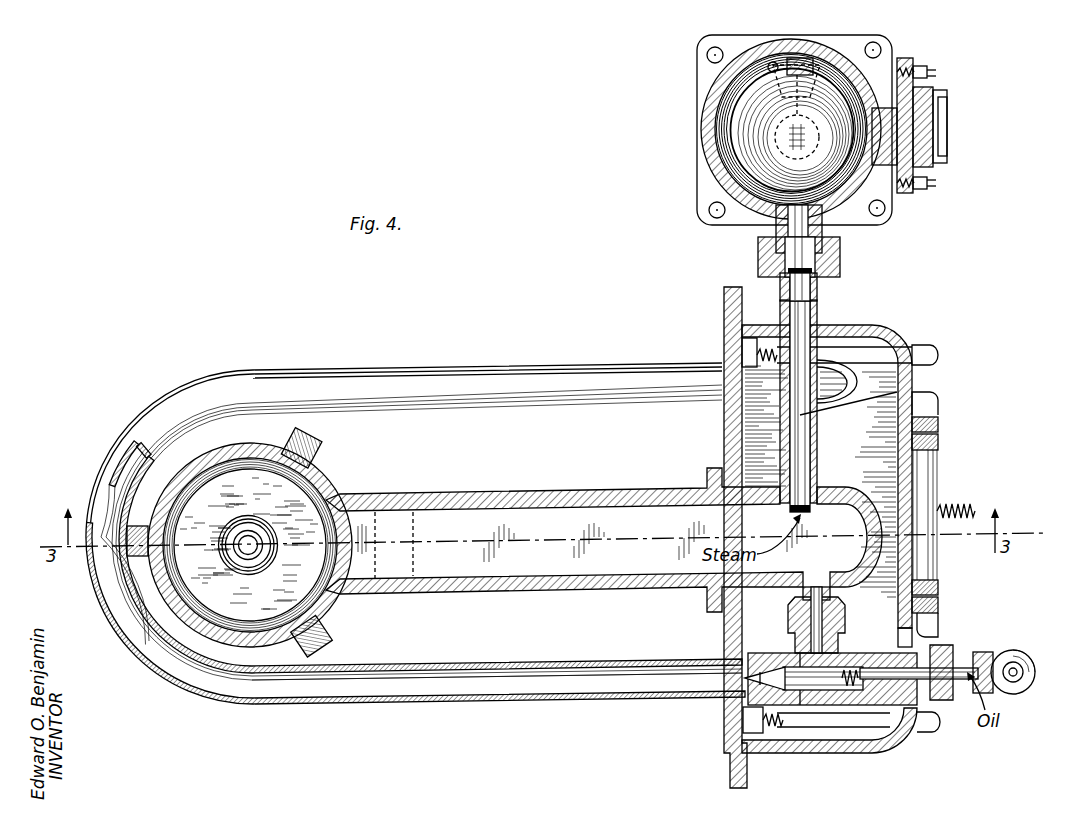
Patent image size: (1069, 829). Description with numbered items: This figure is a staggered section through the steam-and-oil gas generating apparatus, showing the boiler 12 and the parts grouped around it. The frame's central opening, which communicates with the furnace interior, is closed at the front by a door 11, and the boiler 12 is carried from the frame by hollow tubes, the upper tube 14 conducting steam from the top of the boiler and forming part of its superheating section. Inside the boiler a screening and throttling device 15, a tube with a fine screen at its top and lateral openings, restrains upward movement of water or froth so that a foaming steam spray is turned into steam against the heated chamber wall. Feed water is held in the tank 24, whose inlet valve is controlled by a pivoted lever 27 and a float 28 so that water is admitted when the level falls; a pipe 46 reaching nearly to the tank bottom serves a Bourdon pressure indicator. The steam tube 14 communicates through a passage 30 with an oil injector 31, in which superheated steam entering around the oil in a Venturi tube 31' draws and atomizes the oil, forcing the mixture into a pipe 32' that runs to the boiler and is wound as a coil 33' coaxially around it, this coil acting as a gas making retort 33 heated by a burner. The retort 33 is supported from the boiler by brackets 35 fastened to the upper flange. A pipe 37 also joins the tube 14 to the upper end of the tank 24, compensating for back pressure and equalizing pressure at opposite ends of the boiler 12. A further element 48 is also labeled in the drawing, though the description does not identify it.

The door 11 is at (925, 404).
The steam generator or boiler 12 is at (183, 634).
The upper supporting member or tube 14 is at (497, 530).
The screening and throttling device 15 is at (243, 562).
The feed water chamber or tank 24 is at (718, 100).
The pivoted lever 27 is at (793, 106).
The float 28 is at (735, 135).
The duct or passage 30 is at (848, 630).
The oil injector 31 is at (815, 722).
The Venturi tube 31' is at (767, 729).
The pipe 32' is at (652, 694).
The gas making retort 33 is at (400, 572).
The coil 33' is at (379, 504).
The brackets 35 is at (312, 447).
The duct or pipe 37 is at (813, 465).
The pipe 46 is at (769, 66).
The fitting 48 is at (843, 360).